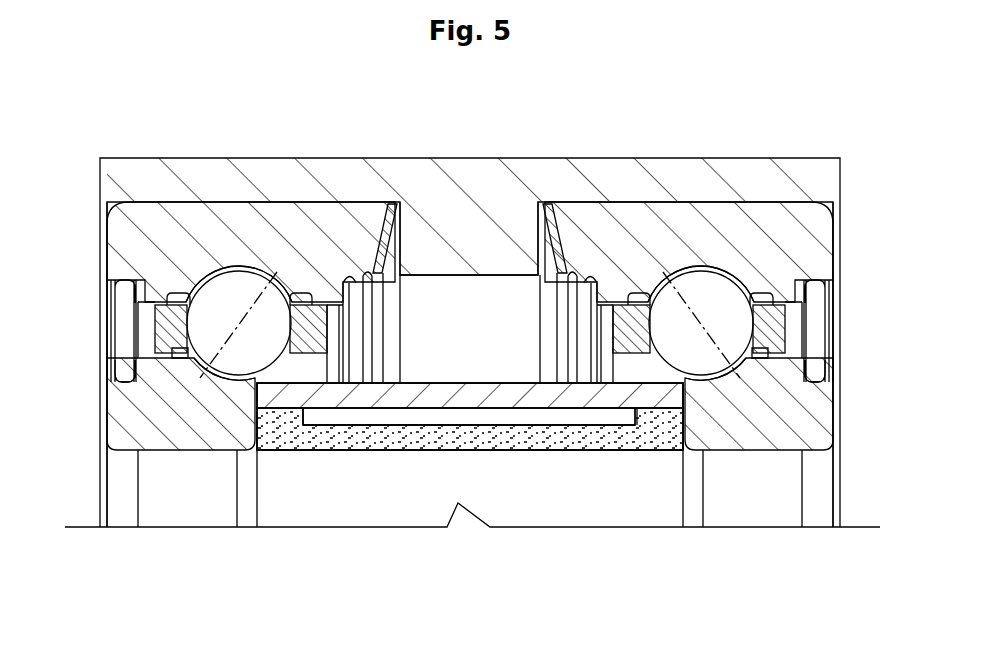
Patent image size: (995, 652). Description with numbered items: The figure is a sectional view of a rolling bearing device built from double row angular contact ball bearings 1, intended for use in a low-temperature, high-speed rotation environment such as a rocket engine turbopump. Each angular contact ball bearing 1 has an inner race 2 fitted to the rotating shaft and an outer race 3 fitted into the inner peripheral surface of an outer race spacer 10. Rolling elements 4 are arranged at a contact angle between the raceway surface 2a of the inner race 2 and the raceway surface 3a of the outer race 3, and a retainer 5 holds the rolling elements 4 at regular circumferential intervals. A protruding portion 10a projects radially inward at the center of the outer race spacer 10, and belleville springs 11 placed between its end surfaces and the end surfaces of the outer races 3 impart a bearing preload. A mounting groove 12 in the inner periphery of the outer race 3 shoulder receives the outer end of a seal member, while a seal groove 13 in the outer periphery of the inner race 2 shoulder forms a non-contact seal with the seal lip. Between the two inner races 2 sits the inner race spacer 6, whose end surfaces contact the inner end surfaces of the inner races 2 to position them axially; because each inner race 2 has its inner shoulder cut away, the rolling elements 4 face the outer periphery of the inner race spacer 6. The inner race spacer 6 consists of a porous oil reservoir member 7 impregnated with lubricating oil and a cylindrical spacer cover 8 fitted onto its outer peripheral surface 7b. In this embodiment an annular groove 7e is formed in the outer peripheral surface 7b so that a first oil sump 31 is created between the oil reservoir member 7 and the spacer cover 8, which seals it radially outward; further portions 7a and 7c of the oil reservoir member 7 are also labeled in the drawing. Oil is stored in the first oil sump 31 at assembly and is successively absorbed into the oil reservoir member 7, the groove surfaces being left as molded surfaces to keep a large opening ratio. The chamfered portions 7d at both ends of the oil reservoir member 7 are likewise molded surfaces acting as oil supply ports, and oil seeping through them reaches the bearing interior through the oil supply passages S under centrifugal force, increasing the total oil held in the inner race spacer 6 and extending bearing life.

The angular contact ball bearing 1 is at (104, 227).
The inner race 2 is at (130, 411).
The raceway surface of the inner race 2a is at (222, 366).
The outer race 3 is at (128, 249).
The raceway surface of the outer race 3a is at (257, 288).
The rolling element 4 is at (218, 292).
The retainer 5 is at (172, 320).
The inner race spacer 6 is at (528, 582).
The oil reservoir member 7 is at (533, 442).
The shaft core portion 7a is at (418, 443).
The outer peripheral surface of the oil reservoir member 7b is at (643, 397).
The shaft shoulder 7c is at (257, 449).
The chamfered portion 7d is at (254, 384).
The annular groove 7e is at (437, 425).
The spacer cover 8 is at (577, 412).
The outer race spacer 10 is at (443, 172).
The protruding portion 10a is at (480, 252).
The belleville spring 11 is at (390, 215).
The mounting groove 12 is at (124, 294).
The seal groove 13 is at (125, 366).
The first oil sump 31 is at (362, 417).
The oil supply passage S is at (285, 406).